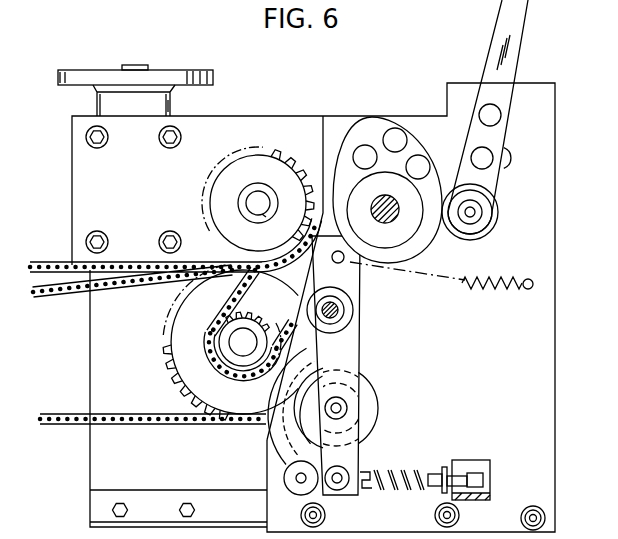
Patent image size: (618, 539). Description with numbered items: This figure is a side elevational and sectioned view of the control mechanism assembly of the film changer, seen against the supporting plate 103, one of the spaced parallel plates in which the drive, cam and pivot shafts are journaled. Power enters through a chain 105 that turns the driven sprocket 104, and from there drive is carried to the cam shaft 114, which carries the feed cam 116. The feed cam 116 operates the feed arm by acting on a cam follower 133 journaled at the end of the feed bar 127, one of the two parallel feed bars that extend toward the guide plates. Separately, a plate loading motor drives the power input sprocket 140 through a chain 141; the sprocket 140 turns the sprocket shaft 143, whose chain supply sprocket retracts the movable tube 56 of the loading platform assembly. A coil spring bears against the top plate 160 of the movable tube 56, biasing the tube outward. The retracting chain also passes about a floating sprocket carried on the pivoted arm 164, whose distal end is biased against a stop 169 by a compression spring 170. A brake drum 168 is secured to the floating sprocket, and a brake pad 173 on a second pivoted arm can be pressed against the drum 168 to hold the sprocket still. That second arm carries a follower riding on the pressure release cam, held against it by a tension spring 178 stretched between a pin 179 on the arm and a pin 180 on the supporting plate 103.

The movable tube 56 is at (104, 101).
The supporting plate 103 is at (96, 446).
The driven sprocket 104 is at (178, 343).
The chain 105 is at (118, 424).
The cam shaft 114 is at (392, 213).
The feed cam 116 is at (415, 128).
The feed bar 127 is at (521, 26).
The cam follower 133 is at (488, 229).
The power input sprocket 140 is at (236, 176).
The chain 141 is at (62, 262).
The sprocket shaft 143 is at (262, 196).
The top plate 160 is at (172, 78).
The arm 164 is at (350, 424).
The brake drum 168 is at (377, 400).
The stop 169 is at (284, 484).
The compression spring 170 is at (392, 491).
The brake pad 173 is at (269, 436).
The tension spring 178 is at (482, 284).
The pin 179 is at (333, 258).
The pin 180 is at (527, 289).